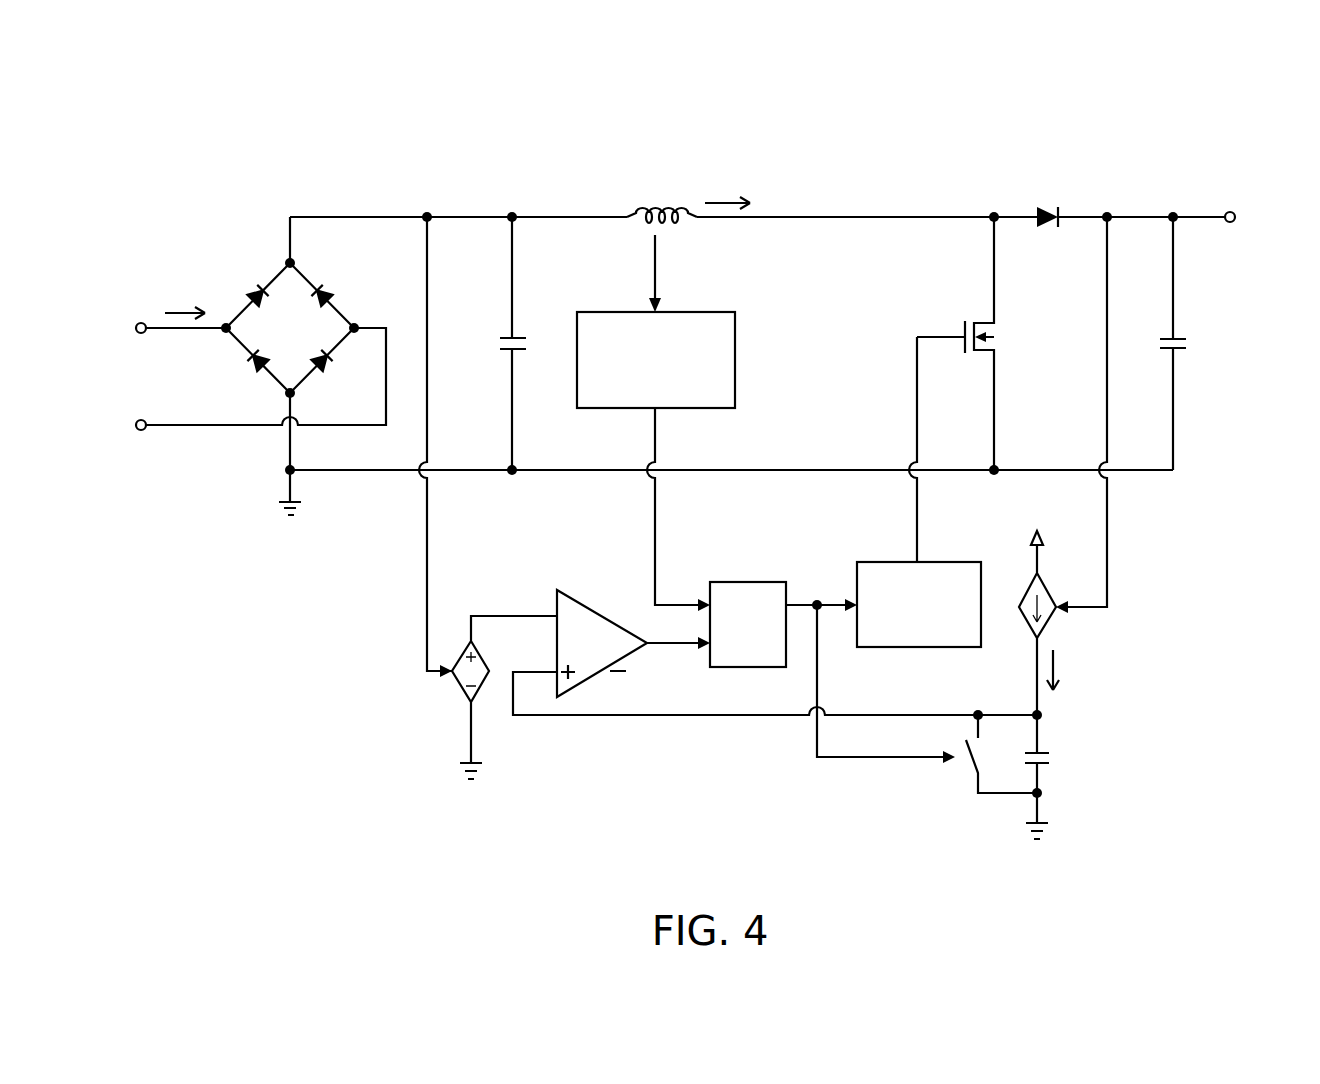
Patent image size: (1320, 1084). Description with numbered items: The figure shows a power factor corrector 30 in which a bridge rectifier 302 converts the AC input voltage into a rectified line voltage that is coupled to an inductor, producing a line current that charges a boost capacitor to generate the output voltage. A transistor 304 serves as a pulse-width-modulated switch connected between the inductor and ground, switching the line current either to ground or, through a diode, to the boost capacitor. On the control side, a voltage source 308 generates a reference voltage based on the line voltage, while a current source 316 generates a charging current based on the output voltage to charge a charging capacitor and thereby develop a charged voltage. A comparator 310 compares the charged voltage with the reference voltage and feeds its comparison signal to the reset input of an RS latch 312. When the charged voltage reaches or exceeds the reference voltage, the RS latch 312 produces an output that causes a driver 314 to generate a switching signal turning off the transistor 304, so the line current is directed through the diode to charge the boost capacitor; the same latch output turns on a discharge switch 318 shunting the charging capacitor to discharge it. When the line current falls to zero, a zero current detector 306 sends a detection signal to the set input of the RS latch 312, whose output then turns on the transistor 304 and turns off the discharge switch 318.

The power factor corrector 30 is at (1156, 120).
The bridge rectifier 302 is at (245, 258).
The transistor 304 is at (967, 317).
The zero current detector 306 is at (736, 354).
The voltage source 308 is at (457, 688).
The comparator 310 is at (598, 612).
The RS latch 312 is at (748, 582).
The driver 314 is at (882, 562).
The current source 316 is at (1022, 590).
The discharge switch 318 is at (962, 775).